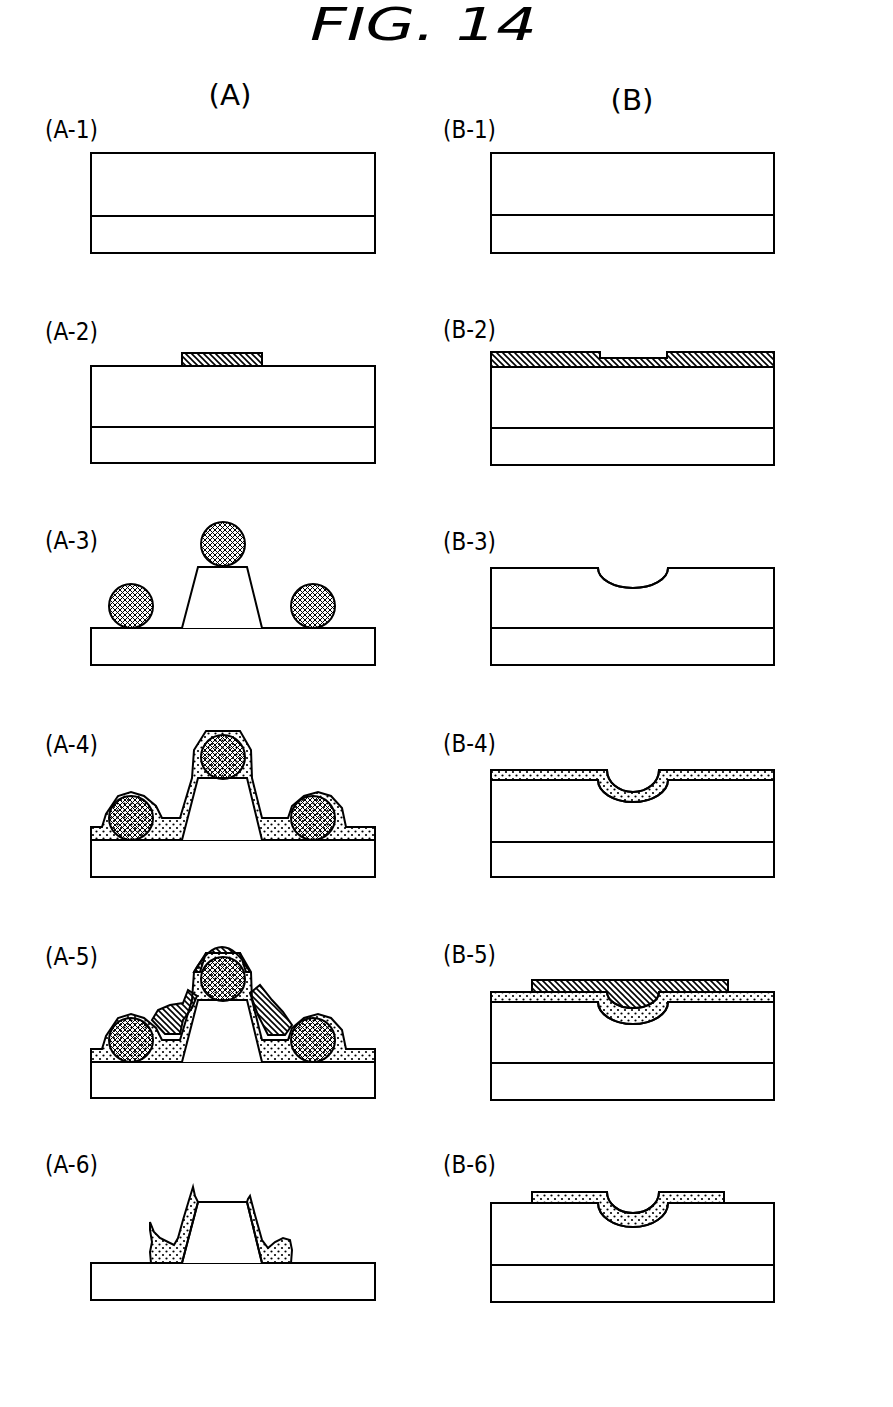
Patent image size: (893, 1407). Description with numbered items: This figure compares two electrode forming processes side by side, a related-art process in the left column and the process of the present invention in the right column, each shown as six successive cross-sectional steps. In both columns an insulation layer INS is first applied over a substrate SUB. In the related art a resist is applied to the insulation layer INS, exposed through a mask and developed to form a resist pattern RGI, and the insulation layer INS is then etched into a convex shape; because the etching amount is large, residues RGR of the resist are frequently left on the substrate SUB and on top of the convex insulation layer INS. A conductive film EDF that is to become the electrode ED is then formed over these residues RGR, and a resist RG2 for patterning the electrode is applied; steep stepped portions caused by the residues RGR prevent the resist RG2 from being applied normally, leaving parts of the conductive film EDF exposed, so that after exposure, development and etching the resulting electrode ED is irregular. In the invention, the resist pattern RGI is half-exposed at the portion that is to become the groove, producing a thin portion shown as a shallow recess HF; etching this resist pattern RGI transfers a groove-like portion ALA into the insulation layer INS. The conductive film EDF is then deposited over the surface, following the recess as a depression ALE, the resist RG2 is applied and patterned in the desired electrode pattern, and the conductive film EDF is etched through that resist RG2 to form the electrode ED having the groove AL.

The insulation layer INS is at (432, 709).
The substrate SUB is at (432, 758).
The resist pattern RGI is at (250, 352).
The hole / opening in resist HF is at (634, 346).
The resist residues RGR is at (246, 540).
The groove-like portion ALA is at (633, 573).
The conductive film EDF is at (253, 773).
The altered area after electrodeposition ALE is at (633, 773).
The resist for patterning the electrode RG2 is at (238, 943).
The electrode ED is at (255, 1213).
The groove AL is at (638, 1193).